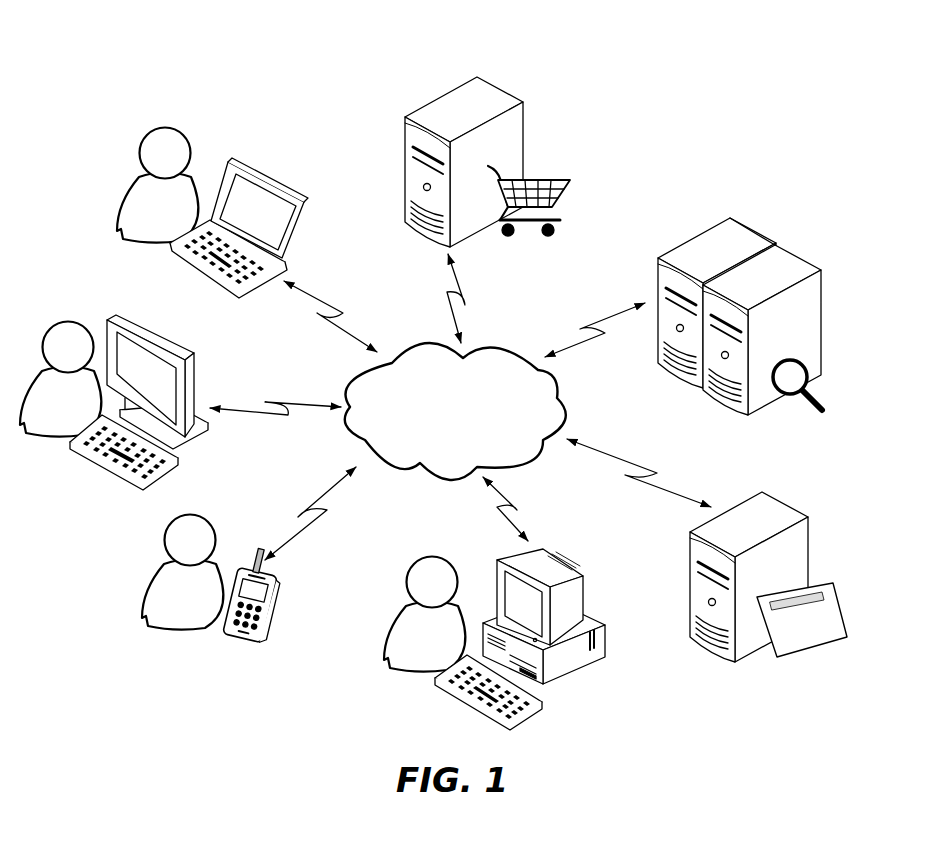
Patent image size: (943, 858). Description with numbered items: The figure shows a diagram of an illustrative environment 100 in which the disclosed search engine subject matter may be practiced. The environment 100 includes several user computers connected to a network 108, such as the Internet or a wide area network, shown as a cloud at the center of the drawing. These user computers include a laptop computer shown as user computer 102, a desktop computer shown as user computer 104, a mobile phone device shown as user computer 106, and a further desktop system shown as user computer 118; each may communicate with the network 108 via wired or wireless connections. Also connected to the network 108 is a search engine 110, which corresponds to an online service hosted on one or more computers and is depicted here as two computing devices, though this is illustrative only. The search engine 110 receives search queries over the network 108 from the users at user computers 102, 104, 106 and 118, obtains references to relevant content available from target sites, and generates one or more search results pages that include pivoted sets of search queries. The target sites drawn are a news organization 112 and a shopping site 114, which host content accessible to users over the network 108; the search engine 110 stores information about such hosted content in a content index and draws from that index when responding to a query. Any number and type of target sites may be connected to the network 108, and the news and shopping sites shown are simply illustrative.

The illustrative environment 100 is at (666, 160).
The user computer 102 is at (260, 176).
The user computer 104 is at (110, 319).
The user computer 106 is at (240, 640).
The network 108 is at (438, 434).
The search engine 110 is at (758, 235).
The news organization 112 is at (792, 508).
The shopping sites 114 is at (523, 125).
The user computer 118 is at (490, 563).